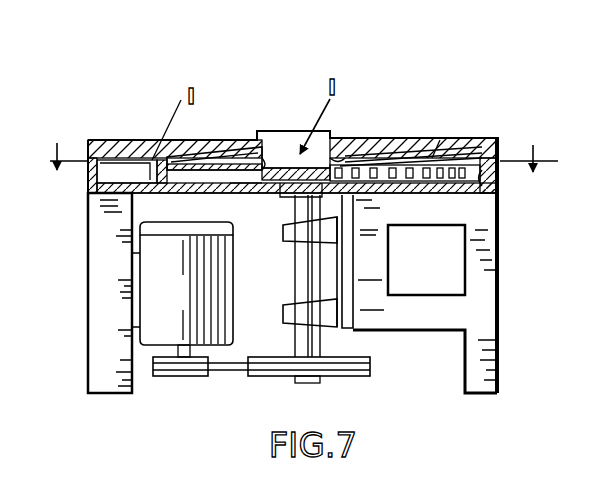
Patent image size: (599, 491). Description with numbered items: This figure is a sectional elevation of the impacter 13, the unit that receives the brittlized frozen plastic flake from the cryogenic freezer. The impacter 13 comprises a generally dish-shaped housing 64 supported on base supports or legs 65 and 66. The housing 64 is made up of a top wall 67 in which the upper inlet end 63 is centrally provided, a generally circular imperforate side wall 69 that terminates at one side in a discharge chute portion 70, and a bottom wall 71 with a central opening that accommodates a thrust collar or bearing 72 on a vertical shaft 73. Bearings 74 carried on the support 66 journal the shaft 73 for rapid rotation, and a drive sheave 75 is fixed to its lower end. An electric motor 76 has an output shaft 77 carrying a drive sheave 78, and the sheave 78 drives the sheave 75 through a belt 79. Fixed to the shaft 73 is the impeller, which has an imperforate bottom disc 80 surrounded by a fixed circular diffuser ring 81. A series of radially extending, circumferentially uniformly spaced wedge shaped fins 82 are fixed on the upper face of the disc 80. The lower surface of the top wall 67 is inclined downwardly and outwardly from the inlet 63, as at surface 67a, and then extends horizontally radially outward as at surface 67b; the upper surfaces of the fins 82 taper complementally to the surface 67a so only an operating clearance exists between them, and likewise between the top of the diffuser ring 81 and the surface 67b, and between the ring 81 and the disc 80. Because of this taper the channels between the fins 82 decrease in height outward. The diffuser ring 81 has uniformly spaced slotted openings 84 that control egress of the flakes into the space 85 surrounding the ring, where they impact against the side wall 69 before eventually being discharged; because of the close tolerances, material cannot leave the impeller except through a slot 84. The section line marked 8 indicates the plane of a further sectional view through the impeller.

The top wall 67 is at (88, 142).
The section line 8- 8 is at (302, 143).
The horizontal surface portion 67b is at (138, 168).
The wedge shaped fins 82 is at (245, 160).
The upper inlet end 63 is at (352, 150).
The inclined surface portion 67a is at (398, 153).
The housing 64 is at (445, 145).
The impacter 13 is at (503, 138).
The side wall 69 is at (490, 176).
The discharge chute portion 70 is at (96, 176).
The bottom wall 71 is at (122, 206).
The bottom disc 80 is at (236, 176).
The thrust collar or bearing 72 is at (291, 181).
The diffuser ring 81 is at (391, 180).
The slotted openings 84 is at (431, 182).
The space 85 is at (500, 208).
The base support leg 65 is at (98, 327).
The electric motor 76 is at (166, 306).
The bearings 74 is at (280, 312).
The output shaft 77 is at (195, 351).
The vertical shaft 73 is at (325, 340).
The base support leg 66 is at (500, 327).
The drive sheave 78 is at (191, 377).
The belt 79 is at (233, 372).
The drive sheave 75 is at (350, 377).